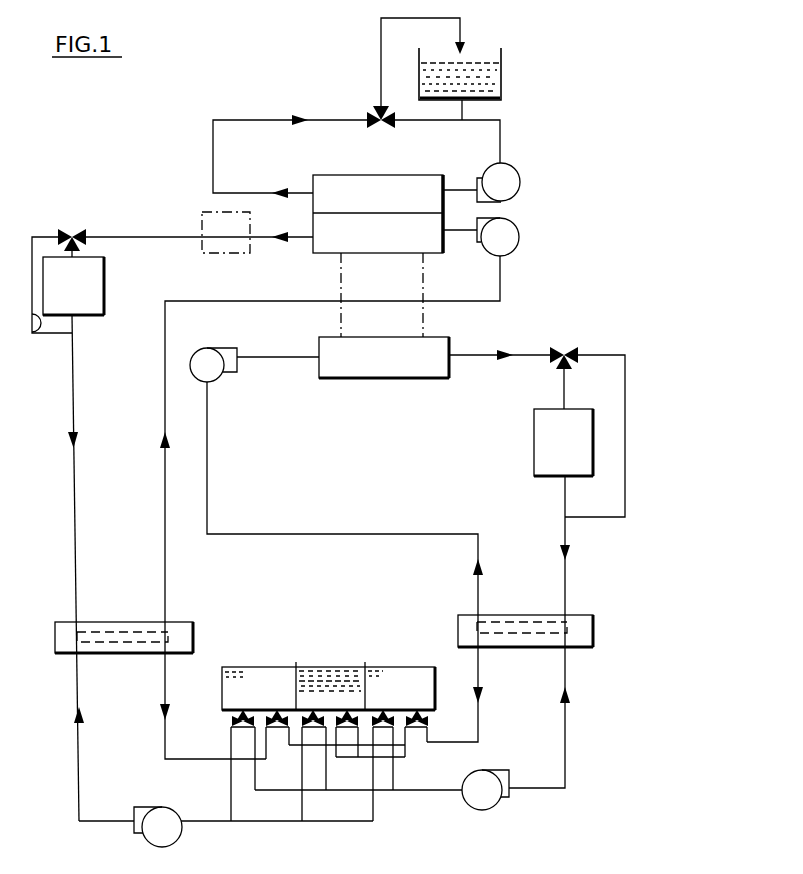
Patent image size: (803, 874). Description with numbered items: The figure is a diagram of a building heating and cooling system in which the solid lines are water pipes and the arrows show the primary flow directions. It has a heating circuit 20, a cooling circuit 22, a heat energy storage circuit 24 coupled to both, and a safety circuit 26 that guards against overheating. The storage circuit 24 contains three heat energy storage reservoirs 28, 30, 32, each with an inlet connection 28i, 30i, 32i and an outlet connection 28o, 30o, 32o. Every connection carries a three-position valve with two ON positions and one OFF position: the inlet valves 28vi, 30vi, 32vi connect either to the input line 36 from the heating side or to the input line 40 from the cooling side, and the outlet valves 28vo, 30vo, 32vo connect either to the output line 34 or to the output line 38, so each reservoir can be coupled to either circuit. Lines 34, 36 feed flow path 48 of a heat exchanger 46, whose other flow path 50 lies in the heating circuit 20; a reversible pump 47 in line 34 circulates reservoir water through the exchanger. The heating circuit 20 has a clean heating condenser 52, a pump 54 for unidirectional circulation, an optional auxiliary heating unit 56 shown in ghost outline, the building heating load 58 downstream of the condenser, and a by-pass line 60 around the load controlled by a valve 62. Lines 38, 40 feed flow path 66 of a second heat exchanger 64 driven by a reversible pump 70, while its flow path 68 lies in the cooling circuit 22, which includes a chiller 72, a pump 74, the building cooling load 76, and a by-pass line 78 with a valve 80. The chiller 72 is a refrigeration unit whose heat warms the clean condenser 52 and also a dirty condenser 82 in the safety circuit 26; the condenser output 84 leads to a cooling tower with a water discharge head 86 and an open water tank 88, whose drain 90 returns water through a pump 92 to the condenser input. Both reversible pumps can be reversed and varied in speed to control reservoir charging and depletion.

The heating circuit 20 is at (505, 277).
The cooling circuit 22 is at (518, 350).
The heat energy storage circuit 24 is at (304, 637).
The safety circuit 26 is at (506, 146).
The heat energy storage reservoir 28 is at (267, 665).
The outlet connection 28o is at (239, 698).
The inlet connection 28i is at (274, 698).
The outlet valve 28vo is at (241, 728).
The inlet valve 28vi is at (277, 728).
The heat energy storage reservoir 30 is at (338, 665).
The outlet connection 30o is at (311, 698).
The inlet connection 30i is at (347, 698).
The outlet valve 30vo is at (313, 728).
The inlet valve 30vi is at (347, 728).
The heat energy storage reservoir 32 is at (407, 665).
The outlet connection 32o is at (381, 698).
The inlet connection 32i is at (415, 698).
The outlet valve 32vo is at (383, 728).
The inlet valve 32vi is at (418, 728).
The output line 34 is at (101, 820).
The input line 36 is at (185, 768).
The output line 38 is at (566, 790).
The input line 40 is at (509, 705).
The heat exchanger 46 is at (194, 622).
The reversible pump 47 is at (165, 841).
The flow path 48 is at (119, 645).
The flow path 50 is at (104, 631).
The clean heating condenser 52 is at (375, 245).
The pump 54 is at (512, 230).
The auxiliary heating unit 56 is at (203, 230).
The building heating load 58 is at (100, 285).
The by-pass line 60 is at (38, 336).
The valve 62 is at (72, 231).
The heat exchanger 64 is at (597, 615).
The flow path 66 is at (533, 640).
The flow path 68 is at (512, 618).
The reversible pump 70 is at (497, 780).
The chiller 72 is at (388, 358).
The pump 74 is at (214, 378).
The building cooling load 76 is at (534, 441).
The by-pass line 78 is at (627, 426).
The valve 80 is at (567, 350).
The dirty condenser 82 is at (378, 209).
The condenser output 84 is at (380, 124).
The water discharge head 86 is at (463, 50).
The open water tank 88 is at (502, 70).
The drain 90 is at (494, 100).
The pump 92 is at (508, 192).